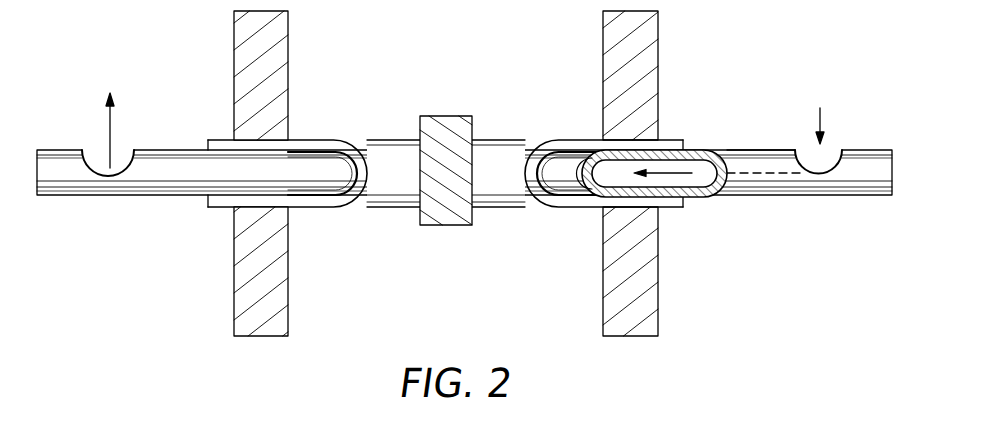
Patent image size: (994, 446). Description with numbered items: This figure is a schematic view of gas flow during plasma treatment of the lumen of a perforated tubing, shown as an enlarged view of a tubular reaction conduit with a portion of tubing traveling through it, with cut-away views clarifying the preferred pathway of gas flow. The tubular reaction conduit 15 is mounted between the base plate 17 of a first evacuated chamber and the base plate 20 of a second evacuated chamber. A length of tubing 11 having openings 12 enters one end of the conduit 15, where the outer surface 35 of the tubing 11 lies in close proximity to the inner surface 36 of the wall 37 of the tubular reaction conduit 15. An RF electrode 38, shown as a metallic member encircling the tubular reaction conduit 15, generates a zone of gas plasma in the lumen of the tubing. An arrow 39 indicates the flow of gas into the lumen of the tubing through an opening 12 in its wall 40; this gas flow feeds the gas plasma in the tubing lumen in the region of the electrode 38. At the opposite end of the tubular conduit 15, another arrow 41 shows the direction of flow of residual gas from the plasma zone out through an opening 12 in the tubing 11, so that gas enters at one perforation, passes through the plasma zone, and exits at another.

The tubing 11 is at (870, 176).
The openings 12 is at (100, 157).
The tubular reaction conduit 15 is at (497, 158).
The base plate 17 is at (658, 28).
The base plate 20 is at (286, 47).
The outer surface 35 is at (776, 148).
The inner surface 36 is at (683, 165).
The wall 37 is at (568, 143).
The RF electrode 38 is at (450, 225).
The arrow 39 is at (820, 110).
The wall 40 is at (585, 195).
The arrow 41 is at (111, 122).